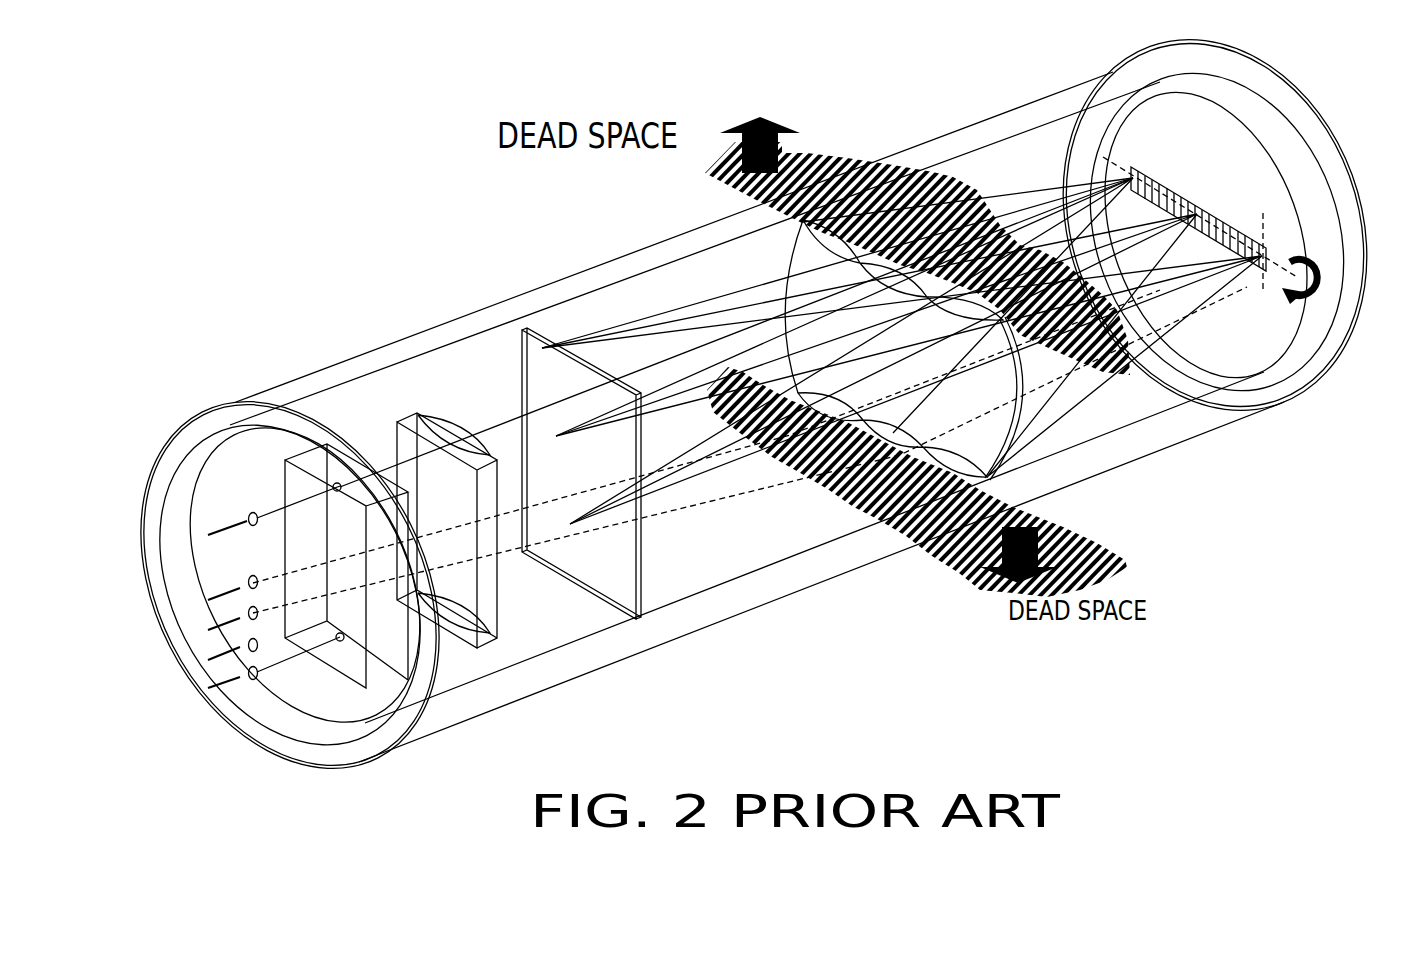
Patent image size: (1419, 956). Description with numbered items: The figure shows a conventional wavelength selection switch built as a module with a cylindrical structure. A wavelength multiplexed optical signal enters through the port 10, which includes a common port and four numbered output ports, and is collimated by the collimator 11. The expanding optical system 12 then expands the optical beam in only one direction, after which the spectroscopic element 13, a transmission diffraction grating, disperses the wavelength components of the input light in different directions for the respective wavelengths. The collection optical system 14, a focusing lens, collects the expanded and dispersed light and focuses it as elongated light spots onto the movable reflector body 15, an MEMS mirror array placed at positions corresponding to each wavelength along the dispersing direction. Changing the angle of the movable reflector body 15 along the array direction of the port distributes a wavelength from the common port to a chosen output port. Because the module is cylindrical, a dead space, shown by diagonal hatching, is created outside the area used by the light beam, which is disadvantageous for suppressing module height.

The port 10 is at (220, 692).
The collimator 11 is at (300, 717).
The expanding optical system 12 is at (485, 650).
The spectroscopic element 13 is at (638, 597).
The collection optical system 14 is at (935, 555).
The movable reflector body 15 is at (1262, 268).